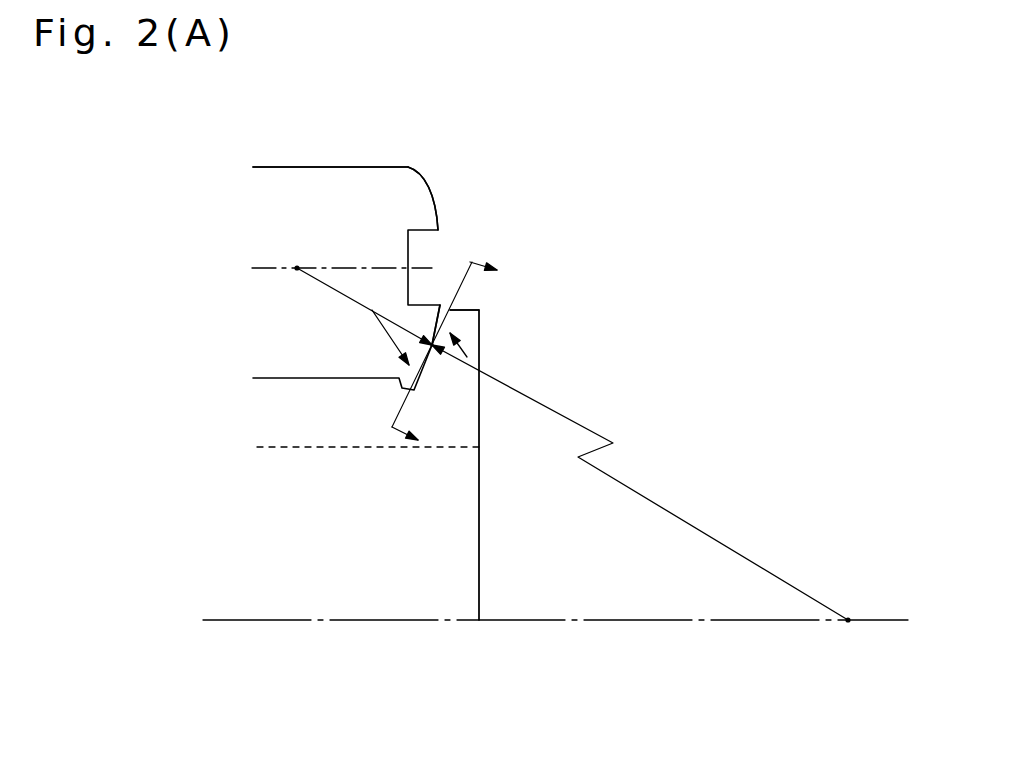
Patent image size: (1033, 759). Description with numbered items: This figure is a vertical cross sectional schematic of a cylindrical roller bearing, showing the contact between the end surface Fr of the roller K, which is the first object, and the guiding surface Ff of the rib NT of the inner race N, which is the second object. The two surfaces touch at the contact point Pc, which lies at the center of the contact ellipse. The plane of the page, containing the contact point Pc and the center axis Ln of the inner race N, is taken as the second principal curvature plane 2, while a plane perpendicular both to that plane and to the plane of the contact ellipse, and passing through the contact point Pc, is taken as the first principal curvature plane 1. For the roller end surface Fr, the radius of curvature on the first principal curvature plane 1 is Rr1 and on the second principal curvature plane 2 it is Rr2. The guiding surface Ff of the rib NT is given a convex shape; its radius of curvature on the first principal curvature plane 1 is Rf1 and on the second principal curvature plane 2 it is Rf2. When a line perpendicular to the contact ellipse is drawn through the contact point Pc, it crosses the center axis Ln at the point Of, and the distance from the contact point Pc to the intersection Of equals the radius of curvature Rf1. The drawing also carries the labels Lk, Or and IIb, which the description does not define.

The first principal curvature plane 1 is at (716, 540).
The second principal curvature plane 2 is at (518, 128).
The roller K is at (348, 177).
The end surface of the roller Fr is at (437, 210).
The guiding surface of the rib of the inner race Ff is at (446, 307).
The reference line through Or Lk is at (277, 270).
The center of rear radius Or is at (289, 256).
The intersection point Of is at (847, 634).
The radius of curvature of the roller end surface on the first principal curvature p Rr1 is at (364, 306).
The radius of curvature of the roller end surface on the second principal curvature Rr2 is at (375, 337).
The radius of curvature of the guiding surface on the first principal curvature plan Rf1 is at (640, 482).
The radius of curvature of the guiding surface on the second principal curvature pla Rf2 is at (464, 356).
The contact point Pc is at (432, 347).
The section line IIb- IIb is at (427, 340).
The rib of the inner race NT is at (470, 322).
The inner race N is at (481, 577).
The center axis of the inner race Ln is at (575, 620).